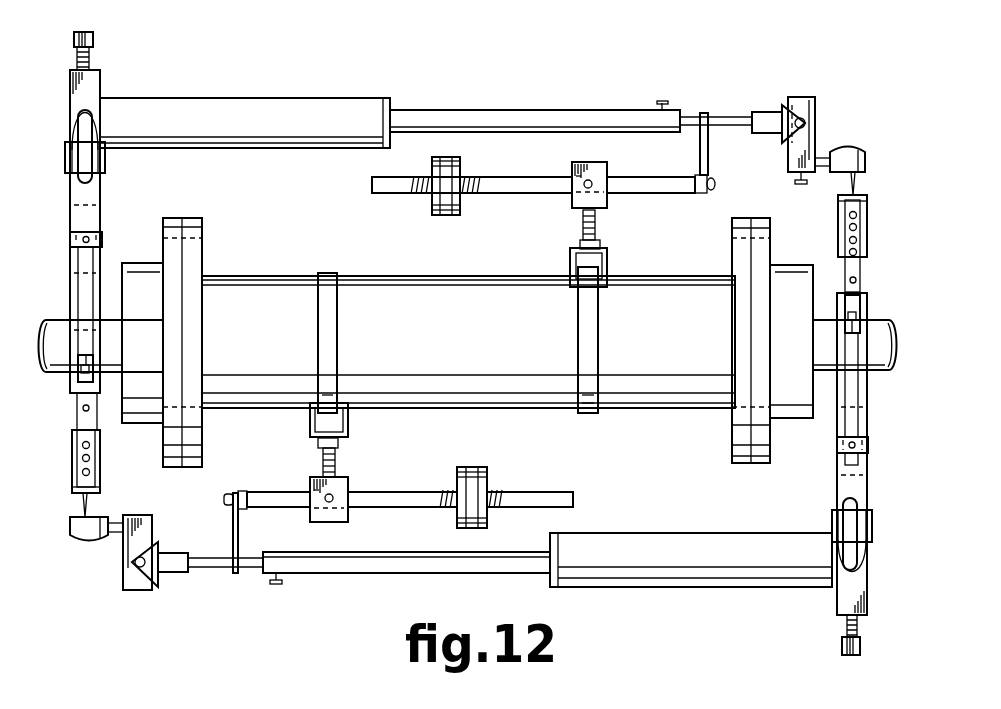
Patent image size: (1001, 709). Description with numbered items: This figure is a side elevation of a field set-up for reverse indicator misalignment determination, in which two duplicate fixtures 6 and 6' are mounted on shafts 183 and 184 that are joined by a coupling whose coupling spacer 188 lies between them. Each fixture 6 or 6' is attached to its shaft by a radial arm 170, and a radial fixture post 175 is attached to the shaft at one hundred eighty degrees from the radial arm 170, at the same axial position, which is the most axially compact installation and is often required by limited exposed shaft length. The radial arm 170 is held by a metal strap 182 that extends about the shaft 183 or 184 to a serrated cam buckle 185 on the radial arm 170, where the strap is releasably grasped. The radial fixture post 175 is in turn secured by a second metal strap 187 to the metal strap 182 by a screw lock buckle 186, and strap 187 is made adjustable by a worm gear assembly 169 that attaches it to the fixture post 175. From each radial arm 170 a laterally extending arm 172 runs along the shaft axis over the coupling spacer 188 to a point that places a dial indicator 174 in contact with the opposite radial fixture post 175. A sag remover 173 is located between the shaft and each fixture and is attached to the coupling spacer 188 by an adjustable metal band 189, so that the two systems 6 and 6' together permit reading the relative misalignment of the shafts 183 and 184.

The piston rod 6 is at (602, 127).
The piston rod 6' is at (336, 553).
The worm gear assembly 169 is at (80, 362).
The radial arm 170 is at (93, 32).
The laterally extending arm 172 is at (295, 100).
The sag remover 173 is at (608, 205).
The dial indicator 174 is at (92, 540).
The radial fixture post 175 is at (72, 447).
The metal strap 182 is at (72, 205).
The shaft 183 is at (55, 325).
The shaft 184 is at (882, 320).
The serrated cam buckle 185 is at (81, 128).
The screw lock buckle 186 is at (102, 240).
The metal strap 187 is at (80, 282).
The coupling spacer 188 is at (458, 340).
The adjustable metal band 189 is at (318, 345).